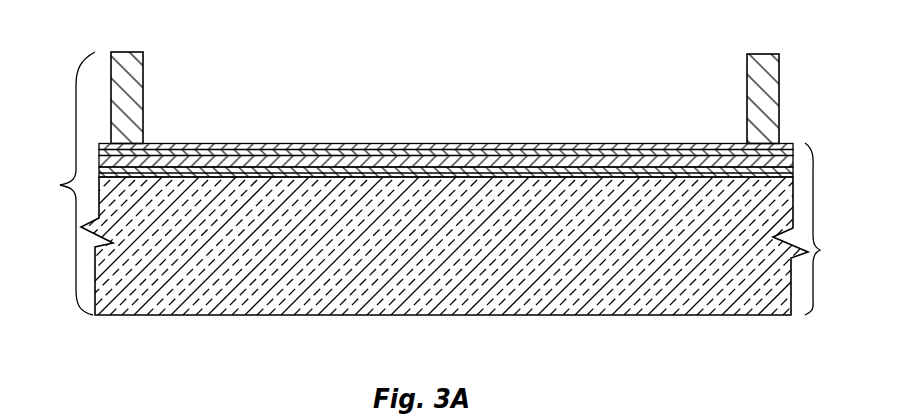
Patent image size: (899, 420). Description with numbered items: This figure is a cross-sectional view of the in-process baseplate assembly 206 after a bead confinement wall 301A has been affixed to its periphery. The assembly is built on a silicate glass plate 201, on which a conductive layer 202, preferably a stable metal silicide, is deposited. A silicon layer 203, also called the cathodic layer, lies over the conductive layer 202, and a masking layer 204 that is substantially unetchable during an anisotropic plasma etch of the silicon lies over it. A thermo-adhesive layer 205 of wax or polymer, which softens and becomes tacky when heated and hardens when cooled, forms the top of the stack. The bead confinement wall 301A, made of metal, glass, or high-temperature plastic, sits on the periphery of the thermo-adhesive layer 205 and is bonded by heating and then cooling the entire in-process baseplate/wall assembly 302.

The silicate glass plate 201 is at (438, 257).
The conductive layer 202 is at (250, 177).
The silicon layer 203 is at (385, 163).
The masking layer 204 is at (498, 157).
The thermo-adhesive layer 205 is at (615, 148).
The in-process baseplate assembly 206 is at (831, 229).
The bead confinement wall 301A is at (132, 77).
The in-process baseplate/wall assembly 302 is at (58, 183).